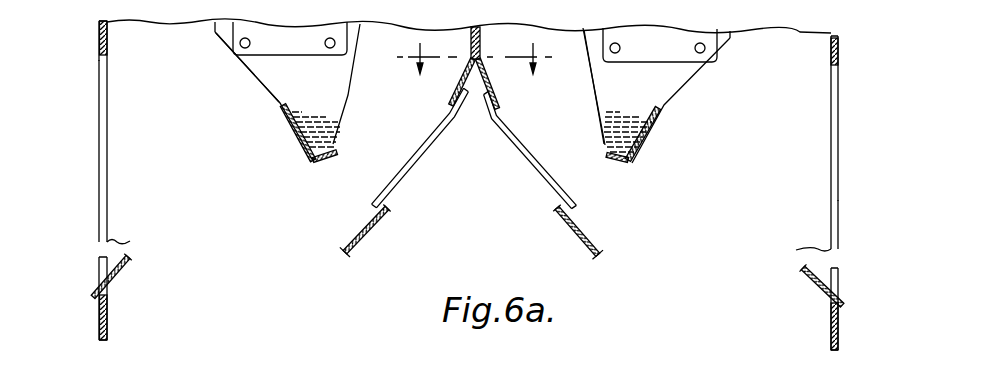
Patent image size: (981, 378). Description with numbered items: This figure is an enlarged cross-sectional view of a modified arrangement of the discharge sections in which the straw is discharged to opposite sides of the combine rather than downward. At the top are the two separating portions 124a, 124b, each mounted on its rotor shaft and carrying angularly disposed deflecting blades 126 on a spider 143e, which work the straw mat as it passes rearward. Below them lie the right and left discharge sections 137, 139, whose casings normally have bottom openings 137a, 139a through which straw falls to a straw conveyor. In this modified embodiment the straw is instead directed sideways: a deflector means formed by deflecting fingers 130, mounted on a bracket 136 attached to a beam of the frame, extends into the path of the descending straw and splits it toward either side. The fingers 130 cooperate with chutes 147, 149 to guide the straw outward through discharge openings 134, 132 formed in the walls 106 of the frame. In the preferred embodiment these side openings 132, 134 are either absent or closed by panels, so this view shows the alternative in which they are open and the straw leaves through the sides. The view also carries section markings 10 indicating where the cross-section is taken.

The section line 10 is at (481, 51).
The walls 106 is at (100, 44).
The separating portion 124a is at (371, 75).
The separating portion 124b is at (727, 98).
The deflecting blades 126 is at (298, 141).
The deflecting fingers 130 is at (523, 160).
The discharge opening 132 is at (831, 192).
The discharge opening 134 is at (99, 265).
The bracket 136 is at (479, 27).
The right discharge section 137 is at (124, 141).
The opening 137a is at (214, 187).
The left discharge section 139 is at (813, 112).
The opening 139a is at (724, 204).
The spider 143e is at (277, 76).
The chute 147 is at (122, 277).
The chute 149 is at (815, 283).